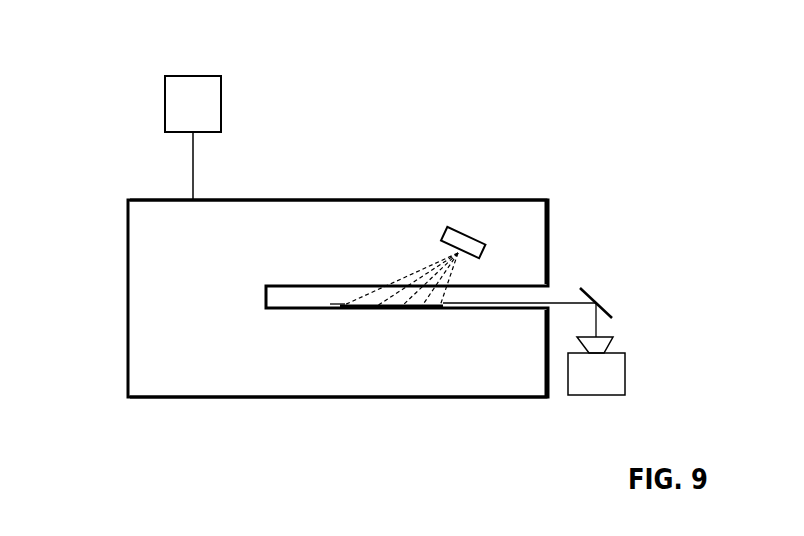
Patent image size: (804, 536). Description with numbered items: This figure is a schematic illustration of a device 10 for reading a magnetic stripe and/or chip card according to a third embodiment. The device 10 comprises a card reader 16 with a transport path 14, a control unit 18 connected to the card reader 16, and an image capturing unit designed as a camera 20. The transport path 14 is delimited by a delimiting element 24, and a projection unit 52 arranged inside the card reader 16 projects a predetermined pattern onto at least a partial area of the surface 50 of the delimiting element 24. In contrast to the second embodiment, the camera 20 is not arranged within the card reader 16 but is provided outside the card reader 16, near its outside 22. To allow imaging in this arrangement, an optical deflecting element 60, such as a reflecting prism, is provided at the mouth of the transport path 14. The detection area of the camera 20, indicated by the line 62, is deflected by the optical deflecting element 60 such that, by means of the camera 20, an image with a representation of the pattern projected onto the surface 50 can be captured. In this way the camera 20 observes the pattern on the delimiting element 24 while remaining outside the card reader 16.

The device for reading a magnetic stripe and/or chip card 10 is at (96, 116).
The transport path 14 is at (537, 293).
The card reader 16 is at (145, 323).
The control unit 18 is at (187, 85).
The camera 20 is at (616, 372).
The outside of the card reader 22 is at (513, 197).
The delimiting element 24 is at (537, 375).
The surface of the delimiting element 50 is at (332, 303).
The projection unit 52 is at (465, 243).
The optical deflecting element 60 is at (605, 308).
The line indicating the detection area of the camera 62 is at (595, 327).